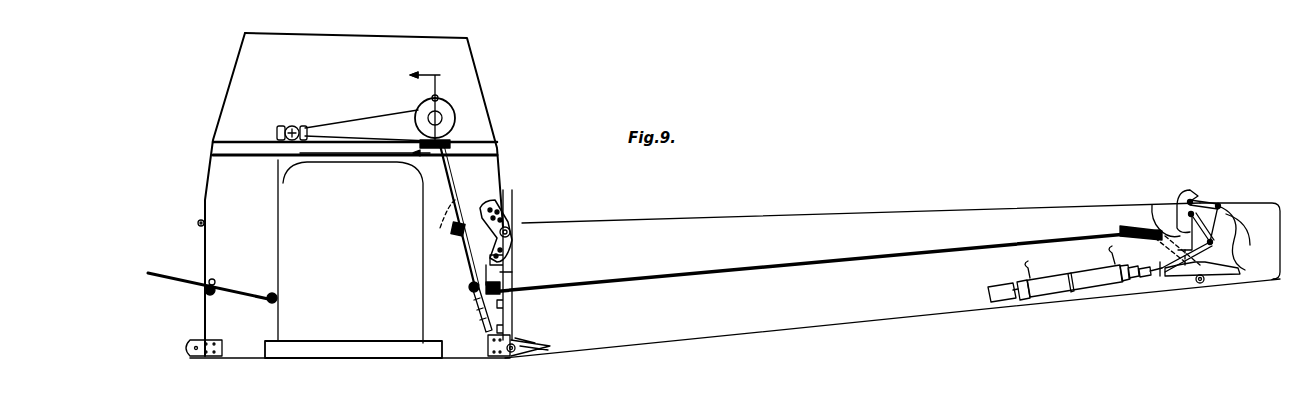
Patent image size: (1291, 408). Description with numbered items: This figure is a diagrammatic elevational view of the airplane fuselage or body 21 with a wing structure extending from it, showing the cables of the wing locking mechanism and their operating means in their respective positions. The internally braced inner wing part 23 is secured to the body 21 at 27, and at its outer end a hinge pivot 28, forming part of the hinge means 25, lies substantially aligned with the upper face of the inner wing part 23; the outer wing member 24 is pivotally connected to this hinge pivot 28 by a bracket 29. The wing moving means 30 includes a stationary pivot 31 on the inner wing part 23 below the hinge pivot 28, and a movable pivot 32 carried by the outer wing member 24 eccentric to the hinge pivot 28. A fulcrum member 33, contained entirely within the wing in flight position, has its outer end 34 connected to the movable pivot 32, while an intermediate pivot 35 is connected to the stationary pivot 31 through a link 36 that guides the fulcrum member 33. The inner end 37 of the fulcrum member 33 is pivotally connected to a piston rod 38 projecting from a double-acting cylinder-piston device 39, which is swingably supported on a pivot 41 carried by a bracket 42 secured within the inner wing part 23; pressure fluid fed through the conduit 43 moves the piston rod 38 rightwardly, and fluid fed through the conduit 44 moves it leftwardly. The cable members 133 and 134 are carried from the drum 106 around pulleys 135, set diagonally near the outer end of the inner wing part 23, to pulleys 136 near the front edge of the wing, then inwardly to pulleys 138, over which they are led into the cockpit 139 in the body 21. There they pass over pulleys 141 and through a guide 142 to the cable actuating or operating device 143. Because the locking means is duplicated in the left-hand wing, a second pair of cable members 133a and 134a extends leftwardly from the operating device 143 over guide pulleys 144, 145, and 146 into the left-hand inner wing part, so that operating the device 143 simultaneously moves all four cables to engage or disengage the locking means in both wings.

The fuselage or body 21 is at (500, 162).
The inner wing part 23 is at (898, 212).
The outer wing member 24 is at (1262, 215).
The hinge means 25 is at (1208, 190).
The securing point 27 is at (512, 225).
The hinge pivot 28 is at (1190, 195).
The bracket 29 is at (1219, 204).
The wing moving means 30 is at (1200, 190).
The stationary pivot 31 is at (1188, 200).
The movable pivot 32 is at (1226, 222).
The fulcrum member 33 is at (1229, 246).
The outer end of fulcrum member 34 is at (1233, 226).
The intermediate pivot 35 is at (1228, 268).
The link 36 is at (1188, 214).
The inner end of fulcrum member 37 is at (1170, 280).
The piston rod 38 is at (1162, 283).
The cylinder-piston device 39 is at (1093, 284).
The pivot 41 is at (1022, 300).
The bracket 42 is at (995, 300).
The conduit 43 is at (1027, 270).
The conduit 44 is at (1111, 256).
The drum 106 is at (1215, 283).
The cable member 133 is at (458, 255).
The cable member 133a is at (381, 123).
The cable member 134 is at (462, 202).
The cable member 134a is at (356, 156).
The pulleys 135 is at (1150, 230).
The pulleys 136 is at (1152, 212).
The pulleys 138 is at (514, 280).
The cockpit 139 is at (482, 143).
The pulleys 141 is at (470, 288).
The guide 142 is at (452, 230).
The cable actuating or operating device 143 is at (445, 108).
The guide pulley 144 is at (291, 127).
The guide pulley 145 is at (268, 295).
The guide pulley 146 is at (214, 280).